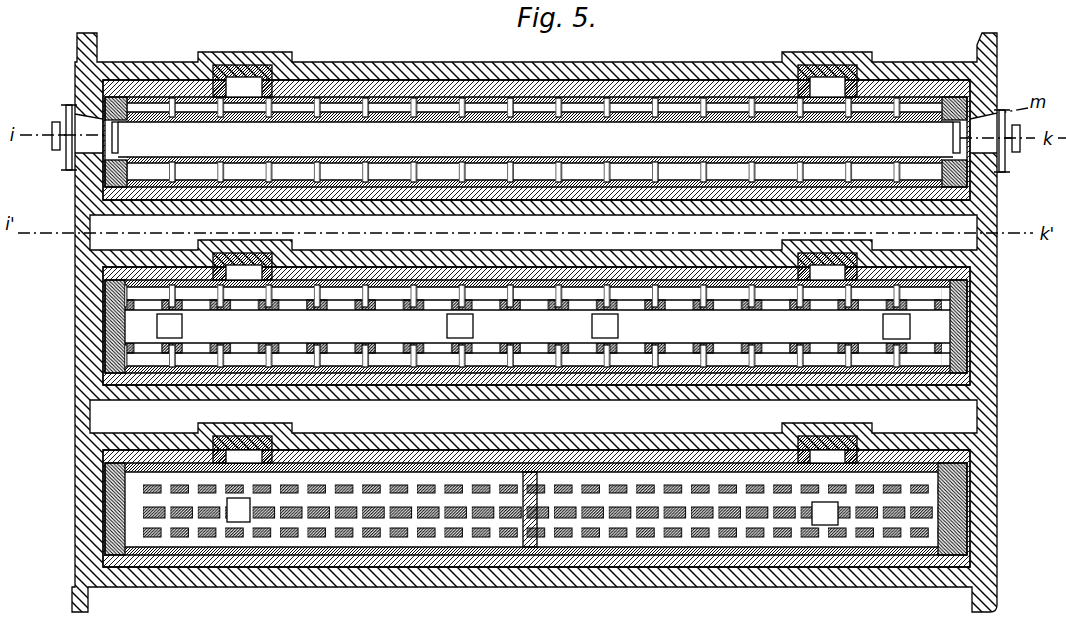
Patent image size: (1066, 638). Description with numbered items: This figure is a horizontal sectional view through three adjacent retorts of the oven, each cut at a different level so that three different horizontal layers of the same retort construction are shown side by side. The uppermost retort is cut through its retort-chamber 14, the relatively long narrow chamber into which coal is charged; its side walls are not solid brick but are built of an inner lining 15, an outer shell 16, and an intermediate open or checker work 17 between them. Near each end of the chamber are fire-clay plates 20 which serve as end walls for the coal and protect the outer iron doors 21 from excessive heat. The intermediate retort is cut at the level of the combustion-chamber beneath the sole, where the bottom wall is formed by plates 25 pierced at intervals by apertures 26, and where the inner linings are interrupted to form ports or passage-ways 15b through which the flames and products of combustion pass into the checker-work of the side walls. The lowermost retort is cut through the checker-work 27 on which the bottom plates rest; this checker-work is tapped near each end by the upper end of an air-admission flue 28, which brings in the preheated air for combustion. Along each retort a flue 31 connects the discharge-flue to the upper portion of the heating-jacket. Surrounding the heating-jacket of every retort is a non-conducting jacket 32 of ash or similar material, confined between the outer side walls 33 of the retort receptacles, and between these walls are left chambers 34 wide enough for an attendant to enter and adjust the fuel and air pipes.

The retort-chamber 14 is at (535, 139).
The inner lining 15 is at (674, 123).
The ports or passage-ways 15b is at (390, 305).
The outer shell 16 is at (624, 177).
The intermediate open or checker work 17 is at (418, 166).
The fire-clay plates 20 is at (957, 134).
The outer iron doors 21 is at (1008, 148).
The plates 25 is at (528, 327).
The apertures 26 is at (533, 326).
The checker-work 27 is at (405, 522).
The air-admission flue 28 is at (825, 518).
The flue 31 is at (822, 456).
The non-conducting jacket 32 is at (543, 456).
The outer side walls 33 is at (687, 445).
The chambers 34 is at (552, 327).